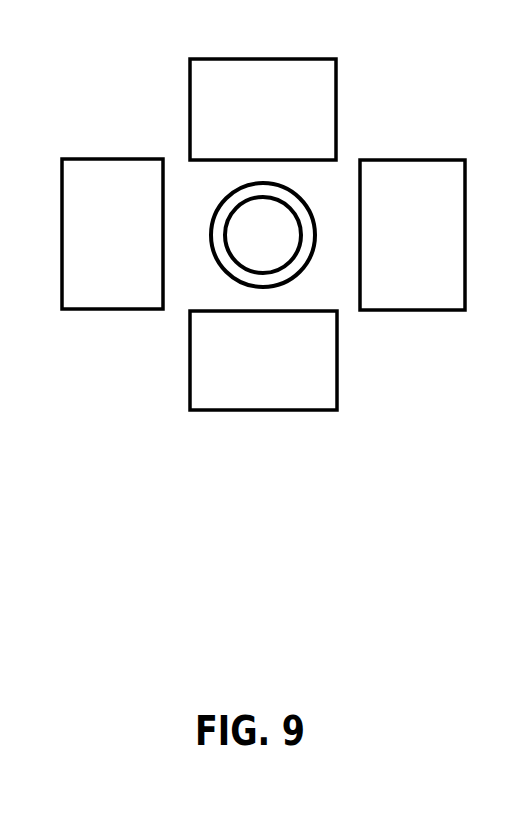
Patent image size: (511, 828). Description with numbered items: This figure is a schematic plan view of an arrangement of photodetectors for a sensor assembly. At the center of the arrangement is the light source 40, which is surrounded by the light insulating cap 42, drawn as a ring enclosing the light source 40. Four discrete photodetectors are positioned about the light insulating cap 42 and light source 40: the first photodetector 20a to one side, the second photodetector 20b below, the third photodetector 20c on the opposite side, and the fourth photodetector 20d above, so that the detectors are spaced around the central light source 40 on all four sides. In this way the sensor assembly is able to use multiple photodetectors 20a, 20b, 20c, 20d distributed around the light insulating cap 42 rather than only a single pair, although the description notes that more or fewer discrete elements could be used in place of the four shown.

The first photodetector 20a is at (412, 235).
The second photodetector 20b is at (263, 360).
The third photodetector 20c is at (112, 234).
The fourth photodetector 20d is at (263, 109).
The light source 40 is at (262, 236).
The light insulating cap 42 is at (300, 196).